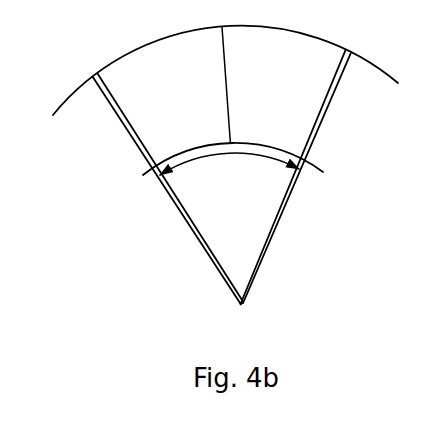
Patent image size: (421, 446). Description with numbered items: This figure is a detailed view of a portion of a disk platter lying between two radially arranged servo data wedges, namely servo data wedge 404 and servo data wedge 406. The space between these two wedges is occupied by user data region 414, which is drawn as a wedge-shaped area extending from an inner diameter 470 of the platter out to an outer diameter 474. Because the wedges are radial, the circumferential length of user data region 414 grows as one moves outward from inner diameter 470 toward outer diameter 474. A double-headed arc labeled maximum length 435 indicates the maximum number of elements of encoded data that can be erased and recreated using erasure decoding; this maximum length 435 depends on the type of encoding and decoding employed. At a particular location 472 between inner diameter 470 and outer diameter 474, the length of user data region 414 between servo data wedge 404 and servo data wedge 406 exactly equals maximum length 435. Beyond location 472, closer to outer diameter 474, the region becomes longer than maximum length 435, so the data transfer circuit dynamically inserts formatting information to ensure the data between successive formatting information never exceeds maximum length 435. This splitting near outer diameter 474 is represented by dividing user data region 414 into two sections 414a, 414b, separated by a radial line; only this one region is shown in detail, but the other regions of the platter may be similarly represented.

The user data region 414 is at (109, 40).
The first section of user data region 414a is at (167, 85).
The second section of user data region 414b is at (320, 68).
The servo data wedge 404 is at (124, 126).
The servo data wedge 406 is at (325, 110).
The maximum length 435 is at (227, 153).
The inner diameter 470 is at (242, 305).
The location 472 is at (146, 173).
The outer diameter 474 is at (62, 105).